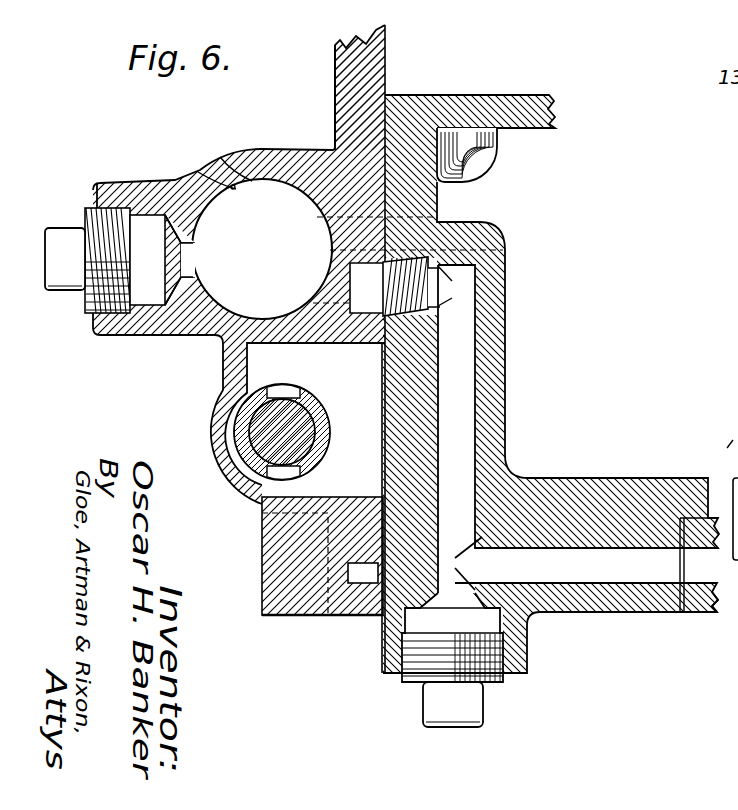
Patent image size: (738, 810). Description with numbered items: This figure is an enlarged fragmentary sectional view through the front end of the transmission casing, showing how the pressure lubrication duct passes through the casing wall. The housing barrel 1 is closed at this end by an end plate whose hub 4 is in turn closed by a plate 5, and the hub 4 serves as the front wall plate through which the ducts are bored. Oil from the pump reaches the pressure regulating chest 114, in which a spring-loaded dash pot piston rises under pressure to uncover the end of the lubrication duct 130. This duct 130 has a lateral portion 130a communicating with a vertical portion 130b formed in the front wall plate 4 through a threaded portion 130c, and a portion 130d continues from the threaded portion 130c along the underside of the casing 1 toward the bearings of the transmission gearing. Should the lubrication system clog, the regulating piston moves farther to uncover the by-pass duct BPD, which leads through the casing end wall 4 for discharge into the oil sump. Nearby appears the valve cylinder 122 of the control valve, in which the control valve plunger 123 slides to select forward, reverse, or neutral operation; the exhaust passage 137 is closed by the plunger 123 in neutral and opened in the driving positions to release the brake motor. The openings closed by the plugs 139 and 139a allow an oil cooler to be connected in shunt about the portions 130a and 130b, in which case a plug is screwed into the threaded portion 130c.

The plate 5 is at (334, 57).
The pressure regulating chest 114 is at (230, 185).
The plug 139 is at (100, 222).
The duct 130 is at (331, 268).
The lateral portion of duct 130a is at (345, 270).
The vertical portion of duct 130b is at (460, 410).
The threaded portion of duct 130c is at (413, 259).
The duct portion 130d is at (651, 570).
The valve cylinder 122 is at (301, 407).
The control valve plunger 123 is at (304, 433).
The exhaust passage 137 is at (360, 577).
The plug 139a is at (440, 705).
The hub 4 is at (593, 612).
The housing barrel 1 is at (716, 598).
The by-pass duct BPD is at (330, 231).